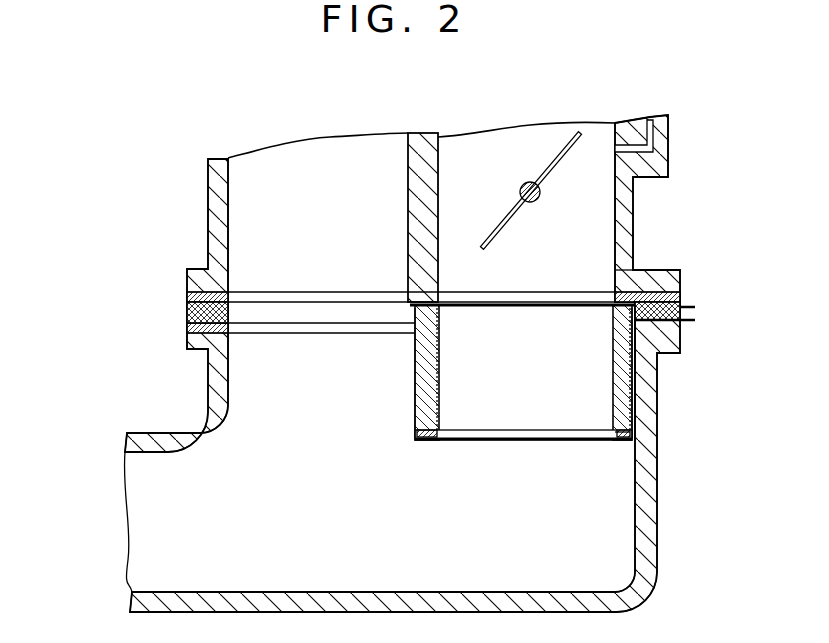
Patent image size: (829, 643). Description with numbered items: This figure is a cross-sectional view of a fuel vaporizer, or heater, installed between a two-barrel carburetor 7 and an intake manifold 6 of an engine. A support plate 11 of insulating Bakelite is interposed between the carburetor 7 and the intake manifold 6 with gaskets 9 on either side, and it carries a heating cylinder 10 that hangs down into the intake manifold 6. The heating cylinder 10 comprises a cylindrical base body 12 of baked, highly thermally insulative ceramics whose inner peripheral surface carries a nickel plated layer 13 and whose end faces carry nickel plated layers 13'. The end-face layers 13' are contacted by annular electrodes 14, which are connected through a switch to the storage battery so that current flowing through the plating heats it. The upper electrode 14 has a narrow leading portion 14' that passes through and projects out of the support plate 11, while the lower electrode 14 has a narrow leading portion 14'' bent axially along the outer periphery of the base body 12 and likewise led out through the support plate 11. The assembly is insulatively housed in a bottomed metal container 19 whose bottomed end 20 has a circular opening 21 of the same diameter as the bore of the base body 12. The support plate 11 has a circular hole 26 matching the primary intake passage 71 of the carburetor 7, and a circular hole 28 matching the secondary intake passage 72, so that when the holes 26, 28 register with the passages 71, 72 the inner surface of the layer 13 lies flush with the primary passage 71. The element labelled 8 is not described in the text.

The intake manifold 6 is at (650, 558).
The carburetor 7 is at (418, 128).
The L-shaped plate 8 is at (617, 148).
The gasket 9 is at (187, 296).
The heating cylinder 10 is at (636, 392).
The support plate 11 is at (187, 312).
The cylindrical base body 12 is at (494, 377).
The nickel plated layer 13 is at (523, 372).
The nickel plated layer 13' is at (533, 370).
The electrode 14 is at (522, 377).
The leading portion 14' is at (666, 280).
The leading portion 14'' is at (685, 325).
The metal container 19 is at (413, 395).
The bottomed end 20 is at (427, 441).
The circular opening 21 is at (613, 441).
The circular hole 26 is at (611, 292).
The circular hole 28 is at (232, 318).
The intake passage 71 is at (503, 155).
The intake passage 72 is at (283, 157).